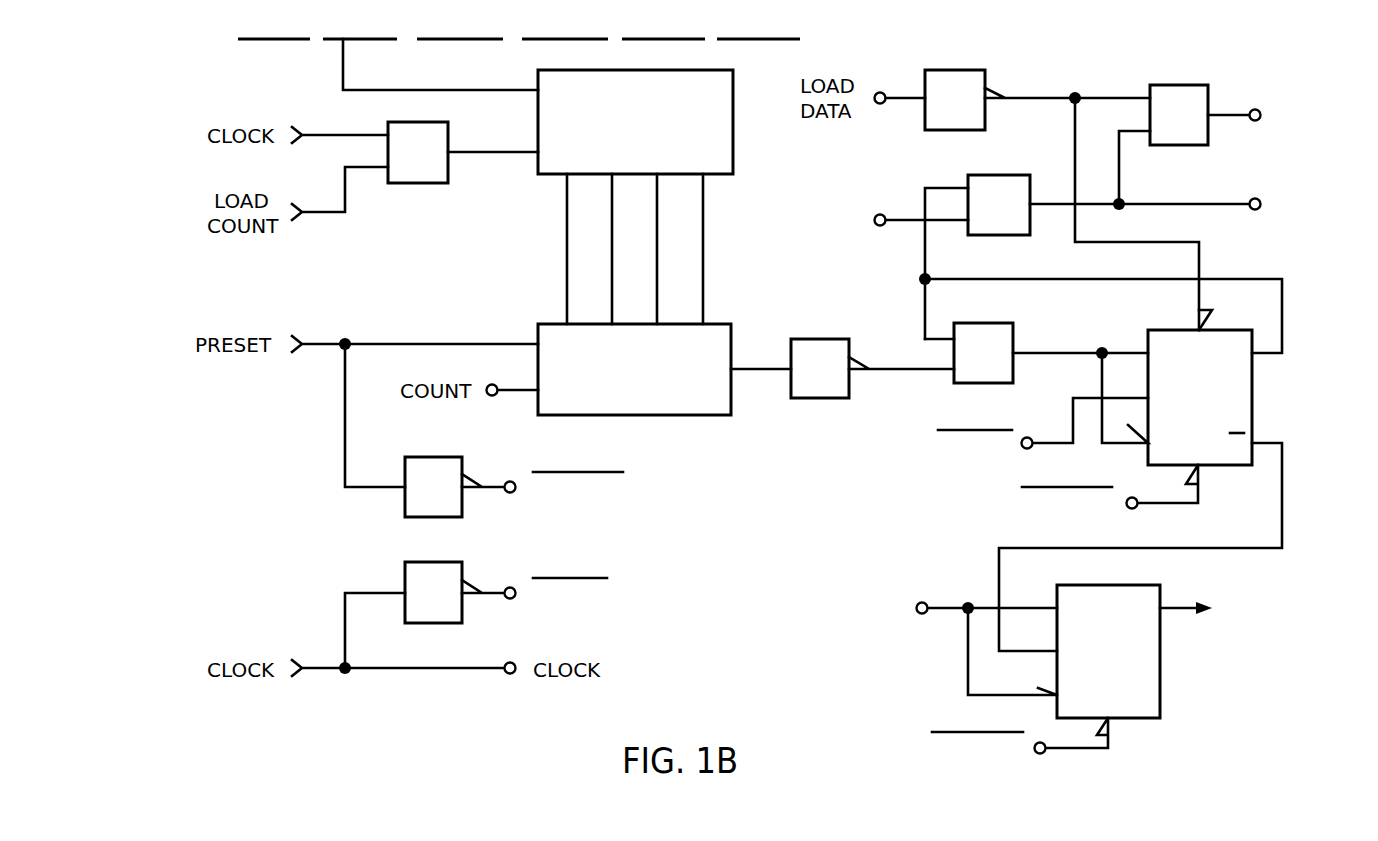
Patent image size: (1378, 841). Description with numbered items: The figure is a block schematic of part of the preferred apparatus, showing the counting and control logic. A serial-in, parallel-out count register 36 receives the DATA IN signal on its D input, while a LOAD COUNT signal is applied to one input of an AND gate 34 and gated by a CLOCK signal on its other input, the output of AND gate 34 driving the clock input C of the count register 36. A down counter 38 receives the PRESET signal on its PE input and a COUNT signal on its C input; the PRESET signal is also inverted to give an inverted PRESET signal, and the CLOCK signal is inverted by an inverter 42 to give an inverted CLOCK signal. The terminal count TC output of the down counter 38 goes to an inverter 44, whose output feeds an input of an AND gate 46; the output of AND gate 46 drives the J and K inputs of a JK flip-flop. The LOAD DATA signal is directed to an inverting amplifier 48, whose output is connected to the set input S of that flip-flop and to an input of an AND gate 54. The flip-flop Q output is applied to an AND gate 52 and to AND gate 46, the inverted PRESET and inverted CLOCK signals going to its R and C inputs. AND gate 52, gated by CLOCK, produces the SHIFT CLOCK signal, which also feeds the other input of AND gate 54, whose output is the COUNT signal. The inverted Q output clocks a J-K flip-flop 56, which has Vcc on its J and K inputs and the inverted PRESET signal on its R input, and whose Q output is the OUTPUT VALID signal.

The AND gate 34 is at (432, 180).
The count register 36 is at (553, 172).
The down counter 38 is at (540, 327).
The inverter 42 is at (410, 582).
The inverter 44 is at (833, 343).
The AND gate 46 is at (987, 330).
The inverting amplifier 48 is at (932, 128).
The AND gate 52 is at (990, 180).
The AND gate 54 is at (1172, 138).
The J-K flip-flop 56 is at (1158, 678).